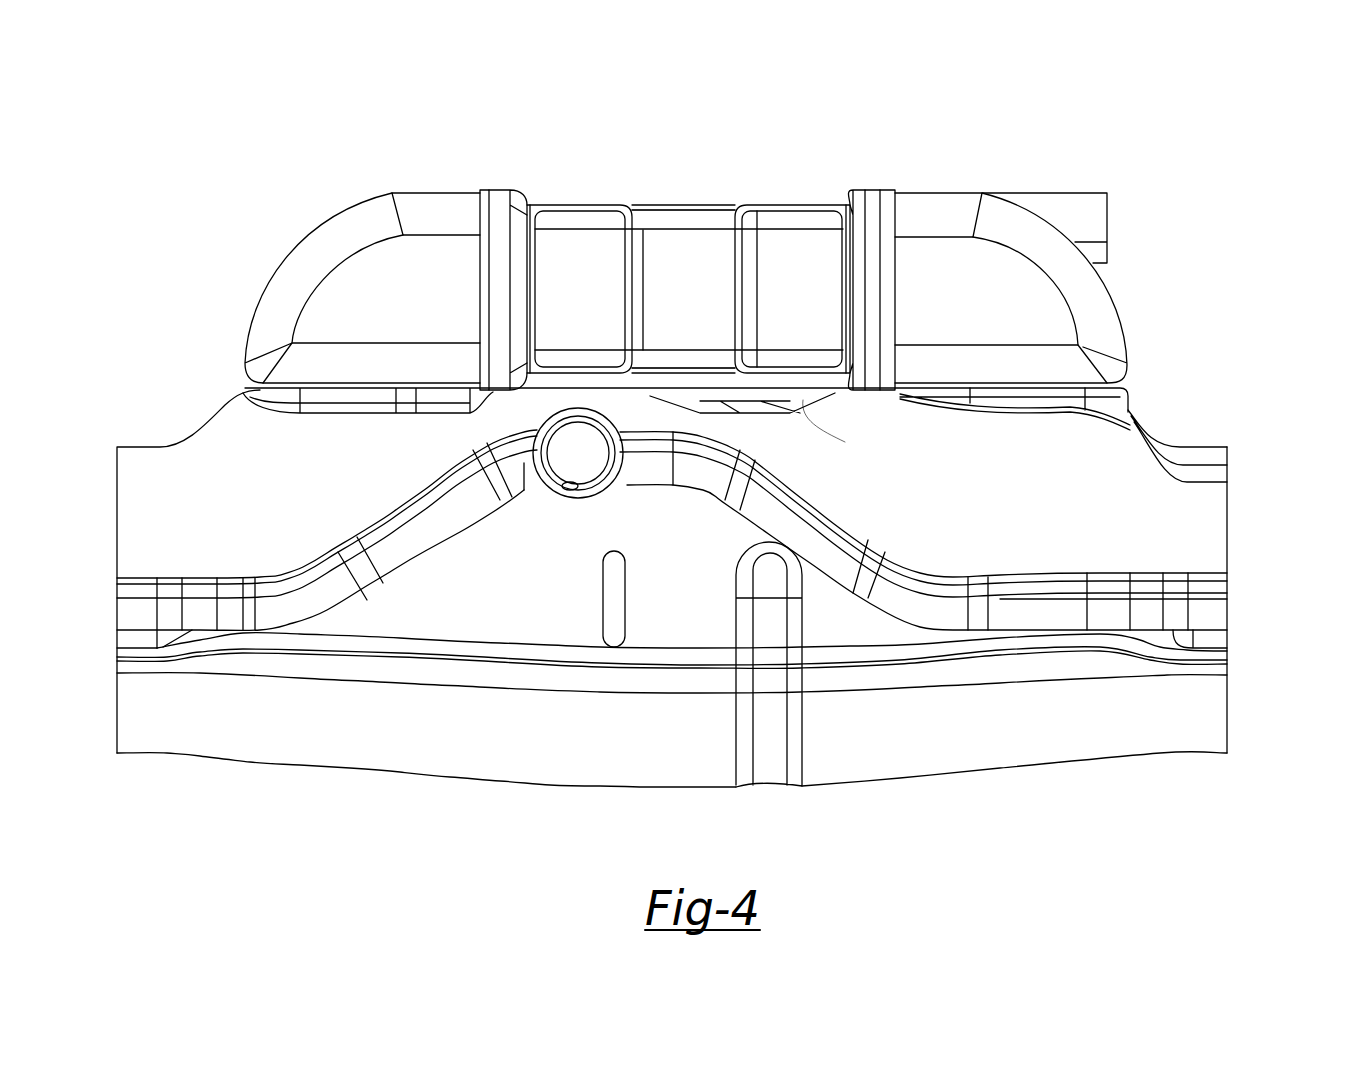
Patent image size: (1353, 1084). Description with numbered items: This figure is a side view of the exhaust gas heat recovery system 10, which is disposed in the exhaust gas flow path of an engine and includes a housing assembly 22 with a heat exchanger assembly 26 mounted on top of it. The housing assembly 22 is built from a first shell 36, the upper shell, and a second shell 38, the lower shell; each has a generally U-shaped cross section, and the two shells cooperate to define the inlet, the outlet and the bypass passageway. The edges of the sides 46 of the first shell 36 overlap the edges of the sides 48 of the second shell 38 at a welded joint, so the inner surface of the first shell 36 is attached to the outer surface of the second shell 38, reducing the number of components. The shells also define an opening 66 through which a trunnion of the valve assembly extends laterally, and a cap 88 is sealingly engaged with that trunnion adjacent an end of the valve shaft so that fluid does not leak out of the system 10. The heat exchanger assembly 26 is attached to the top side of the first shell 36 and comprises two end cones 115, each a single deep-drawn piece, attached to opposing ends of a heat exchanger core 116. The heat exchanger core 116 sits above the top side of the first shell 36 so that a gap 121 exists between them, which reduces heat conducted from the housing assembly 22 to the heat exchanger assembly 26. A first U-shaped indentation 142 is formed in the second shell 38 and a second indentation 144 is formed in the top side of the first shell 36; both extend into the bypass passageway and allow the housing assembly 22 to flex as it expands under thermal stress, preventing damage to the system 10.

The exhaust gas heat recovery system 10 is at (703, 462).
The housing assembly 22 is at (731, 276).
The heat exchanger assembly 26 is at (715, 256).
The end cones 115 is at (280, 256).
The heat exchanger core 116 is at (680, 195).
The gap 121 is at (703, 400).
The first shell 36 is at (699, 628).
The second shell 38 is at (703, 741).
The sides 46 is at (1087, 452).
The sides 48 is at (955, 733).
The cap 88 is at (550, 436).
The opening 66 is at (578, 502).
The first U-shaped indentation 142 is at (763, 747).
The second indentation 144 is at (803, 400).